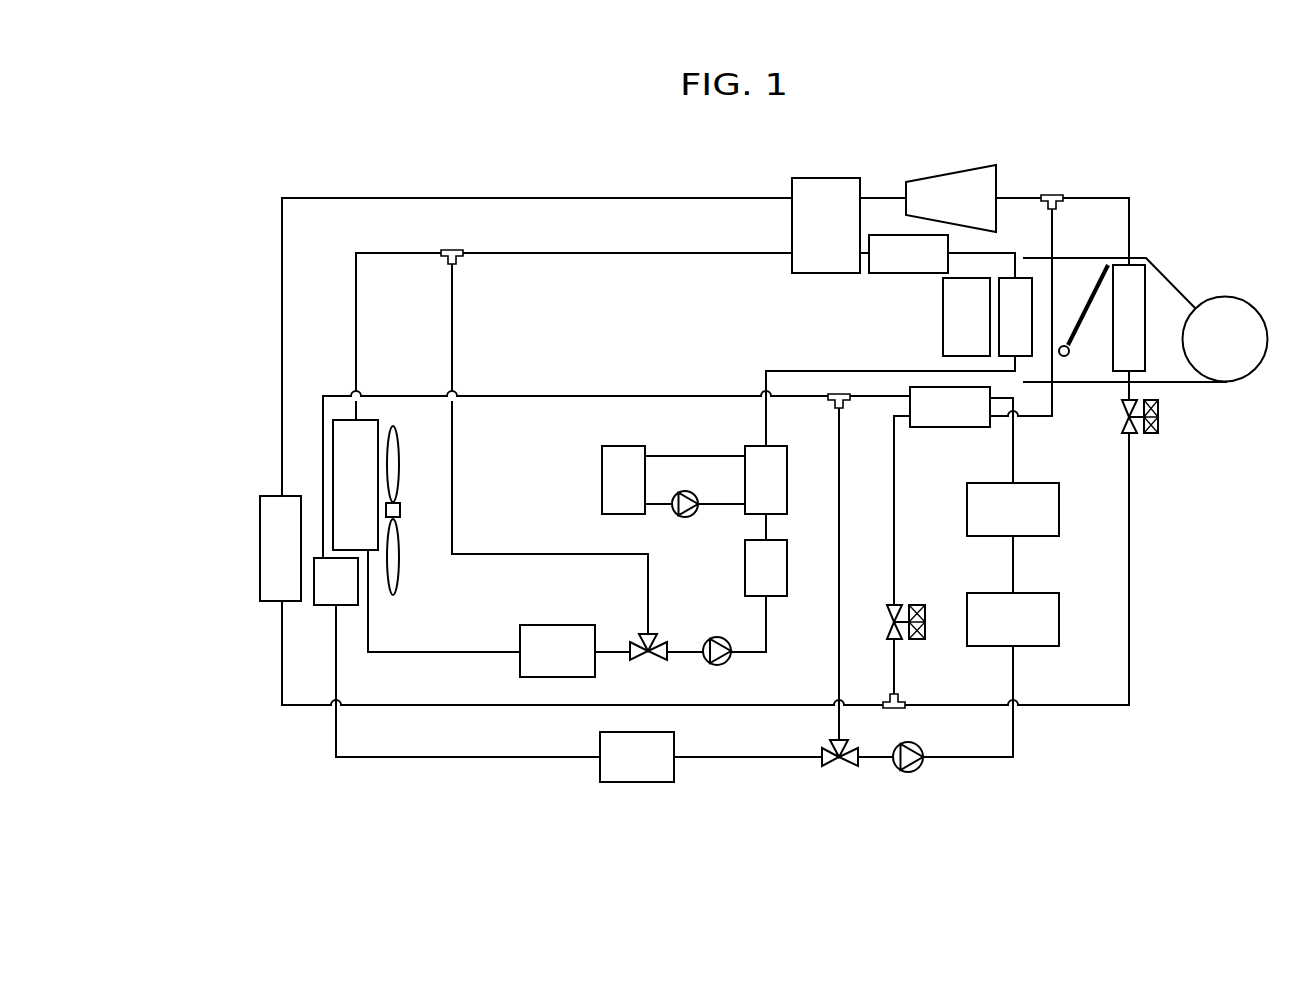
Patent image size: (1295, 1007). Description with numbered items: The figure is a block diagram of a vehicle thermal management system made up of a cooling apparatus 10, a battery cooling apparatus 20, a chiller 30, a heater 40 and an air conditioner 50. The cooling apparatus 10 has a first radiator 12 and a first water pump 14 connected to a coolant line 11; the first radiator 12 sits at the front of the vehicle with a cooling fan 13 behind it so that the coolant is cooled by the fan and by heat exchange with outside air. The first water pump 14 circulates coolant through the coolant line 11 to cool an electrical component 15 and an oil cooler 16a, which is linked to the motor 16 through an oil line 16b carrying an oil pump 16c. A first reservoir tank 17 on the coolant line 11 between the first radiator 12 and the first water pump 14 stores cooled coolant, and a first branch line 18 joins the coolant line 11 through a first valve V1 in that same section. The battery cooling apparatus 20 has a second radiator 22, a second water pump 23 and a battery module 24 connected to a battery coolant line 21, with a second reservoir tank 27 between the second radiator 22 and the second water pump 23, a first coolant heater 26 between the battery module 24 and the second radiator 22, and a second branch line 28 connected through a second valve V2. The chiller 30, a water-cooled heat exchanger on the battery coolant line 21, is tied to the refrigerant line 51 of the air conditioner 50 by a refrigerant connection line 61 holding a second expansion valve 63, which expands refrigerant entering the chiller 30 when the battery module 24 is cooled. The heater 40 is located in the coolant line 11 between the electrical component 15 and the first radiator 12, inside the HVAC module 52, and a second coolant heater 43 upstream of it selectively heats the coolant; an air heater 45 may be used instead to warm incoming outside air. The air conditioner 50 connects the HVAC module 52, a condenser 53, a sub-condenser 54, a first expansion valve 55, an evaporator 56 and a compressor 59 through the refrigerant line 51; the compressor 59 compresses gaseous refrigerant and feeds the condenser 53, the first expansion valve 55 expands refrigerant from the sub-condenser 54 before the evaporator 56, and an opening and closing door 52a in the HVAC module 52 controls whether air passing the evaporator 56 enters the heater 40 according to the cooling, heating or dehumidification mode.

The cooling apparatus 10 is at (685, 478).
The coolant line 11 is at (636, 253).
The first radiator 12 is at (380, 419).
The cooling fan 13 is at (400, 510).
The first water pump 14 is at (727, 662).
The electrical component 15 is at (745, 567).
The motor 16 is at (602, 481).
The oil cooler 16a is at (787, 482).
The oil line 16b is at (720, 456).
The oil pump 16c is at (677, 515).
The first reservoir tank 17 is at (556, 625).
The first branch line 18 is at (452, 476).
The battery cooling apparatus 20 is at (692, 589).
The battery coolant line 21 is at (559, 396).
The second radiator 22 is at (322, 605).
The second water pump 23 is at (908, 772).
The battery module 24 is at (1059, 620).
The first coolant heater 26 is at (1059, 510).
The second reservoir tank 27 is at (636, 782).
The second branch line 28 is at (839, 650).
The chiller 30 is at (948, 427).
The heater 40 is at (1021, 358).
The second coolant heater 43 is at (898, 273).
The air heater 45 is at (943, 343).
The air conditioner 50 is at (686, 450).
The refrigerant line 51 is at (497, 198).
The HVAC module 52 is at (1219, 287).
The opening and closing door 52a is at (1083, 320).
The condenser 53 is at (827, 178).
The sub-condenser 54 is at (260, 549).
The first expansion valve 55 is at (1158, 417).
The evaporator 56 is at (1145, 308).
The compressor 59 is at (952, 173).
The refrigerant connection line 61 is at (1052, 401).
The second expansion valve 63 is at (918, 605).
The first valve V1 is at (646, 662).
The second valve V2 is at (845, 766).